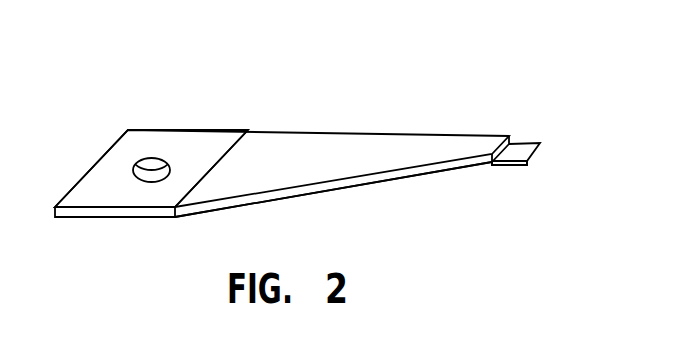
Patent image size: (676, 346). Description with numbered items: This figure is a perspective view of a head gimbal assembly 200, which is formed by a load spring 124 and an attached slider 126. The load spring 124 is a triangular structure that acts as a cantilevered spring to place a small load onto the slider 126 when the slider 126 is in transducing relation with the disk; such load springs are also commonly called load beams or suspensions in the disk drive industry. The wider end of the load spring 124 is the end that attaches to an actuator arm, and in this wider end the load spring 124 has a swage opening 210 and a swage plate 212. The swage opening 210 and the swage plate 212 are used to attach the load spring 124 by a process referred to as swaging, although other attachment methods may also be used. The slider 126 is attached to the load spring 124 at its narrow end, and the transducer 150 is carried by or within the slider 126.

The head gimbal assembly 200 is at (413, 95).
The swage plate 212 is at (177, 137).
The swage opening 210 is at (135, 160).
The load spring 124 is at (338, 189).
The slider 126 is at (498, 167).
The transducer 150 is at (536, 152).